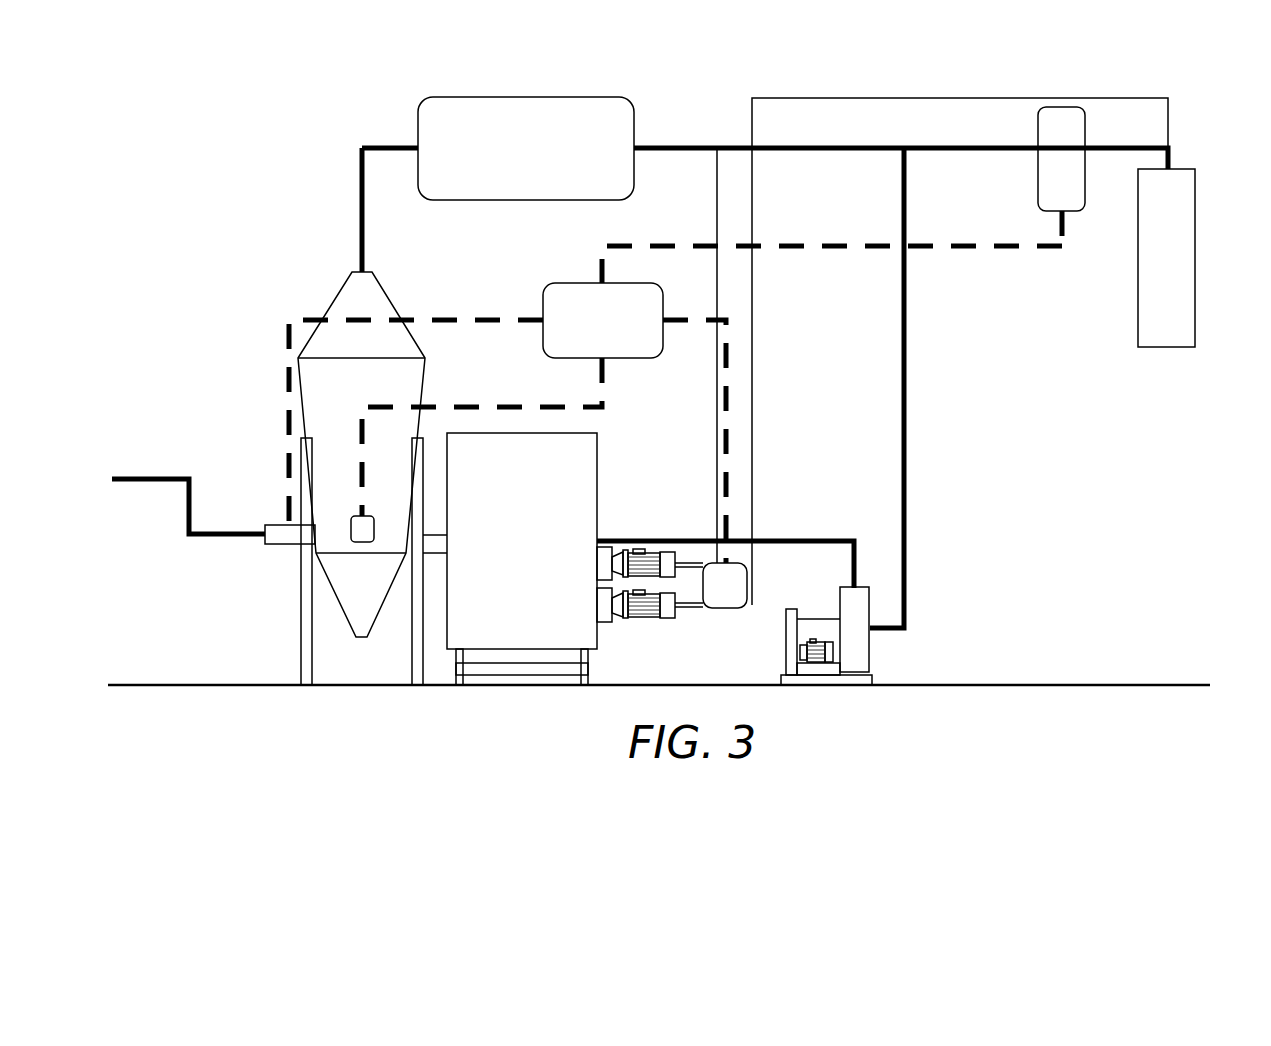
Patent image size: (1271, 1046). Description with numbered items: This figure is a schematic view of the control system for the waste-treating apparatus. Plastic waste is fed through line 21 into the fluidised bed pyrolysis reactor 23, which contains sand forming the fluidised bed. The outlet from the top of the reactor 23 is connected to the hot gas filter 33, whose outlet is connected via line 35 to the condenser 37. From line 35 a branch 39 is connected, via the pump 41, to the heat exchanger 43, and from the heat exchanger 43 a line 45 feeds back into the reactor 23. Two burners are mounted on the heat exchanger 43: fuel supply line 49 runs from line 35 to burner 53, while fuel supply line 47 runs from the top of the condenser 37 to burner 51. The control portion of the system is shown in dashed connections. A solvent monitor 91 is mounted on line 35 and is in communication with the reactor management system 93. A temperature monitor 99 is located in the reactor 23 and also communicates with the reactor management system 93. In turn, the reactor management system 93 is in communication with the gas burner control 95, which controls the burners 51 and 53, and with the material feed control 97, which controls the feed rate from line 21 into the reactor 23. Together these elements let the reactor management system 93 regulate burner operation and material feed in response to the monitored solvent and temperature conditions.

The line 21 is at (133, 476).
The fluidised bed pyrolysis reactor 23 is at (345, 289).
The hot gas filter 33 is at (594, 97).
The line 35 is at (833, 152).
The condenser 37 is at (1197, 180).
The branch 39 is at (907, 321).
The pump 41 is at (829, 640).
The heat exchanger 43 is at (597, 447).
The line 45 is at (437, 542).
The fuel supply line 47 is at (1170, 106).
The fuel supply line 49 is at (717, 191).
The burner 51 is at (650, 618).
The burner 53 is at (652, 549).
The solvent monitor 91 is at (1060, 107).
The reactor management system 93 is at (561, 283).
The gas burner control 95 is at (727, 609).
The material feed control 97 is at (278, 547).
The temperature monitor 99 is at (363, 545).